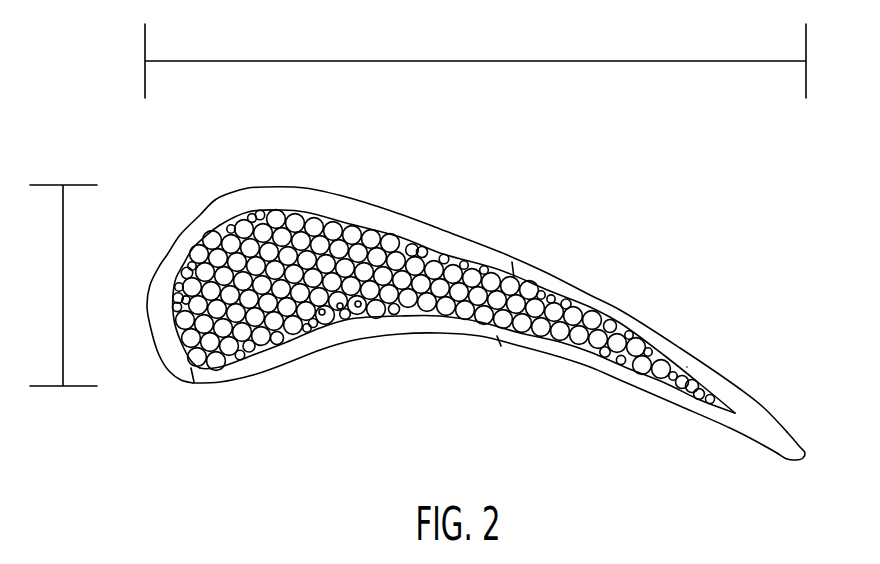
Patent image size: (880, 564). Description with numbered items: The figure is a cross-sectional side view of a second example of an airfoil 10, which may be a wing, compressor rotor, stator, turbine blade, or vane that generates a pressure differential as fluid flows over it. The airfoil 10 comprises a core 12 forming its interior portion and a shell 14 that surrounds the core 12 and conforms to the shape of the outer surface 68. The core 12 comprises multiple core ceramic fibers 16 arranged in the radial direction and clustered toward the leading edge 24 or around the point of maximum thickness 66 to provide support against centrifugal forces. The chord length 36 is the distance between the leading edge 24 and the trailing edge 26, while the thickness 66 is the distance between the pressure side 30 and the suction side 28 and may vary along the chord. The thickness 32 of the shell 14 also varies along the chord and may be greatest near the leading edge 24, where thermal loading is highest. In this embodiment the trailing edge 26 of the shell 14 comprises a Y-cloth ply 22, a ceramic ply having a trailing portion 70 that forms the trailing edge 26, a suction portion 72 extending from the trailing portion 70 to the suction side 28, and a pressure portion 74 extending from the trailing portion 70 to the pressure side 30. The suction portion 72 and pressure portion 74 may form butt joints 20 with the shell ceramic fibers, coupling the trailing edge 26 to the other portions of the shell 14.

The airfoil 10 is at (476, 168).
The core 12 is at (357, 240).
The shell 14 is at (265, 197).
The core ceramic fibers 16 is at (358, 303).
The butt joint 20 is at (512, 270).
The Y-cloth ply 22 is at (775, 413).
The leading edge 24 is at (134, 302).
The trailing edge 26 is at (815, 467).
The suction side 28 is at (566, 264).
The pressure side 30 is at (468, 347).
The thickness of the shell 32 is at (194, 382).
The chord length 36 is at (509, 60).
The thickness of the airfoil 66 is at (63, 280).
The outer surface 68 is at (377, 337).
The trailing portion 70 is at (785, 443).
The suction portion 72 is at (687, 367).
The pressure portion 74 is at (670, 388).